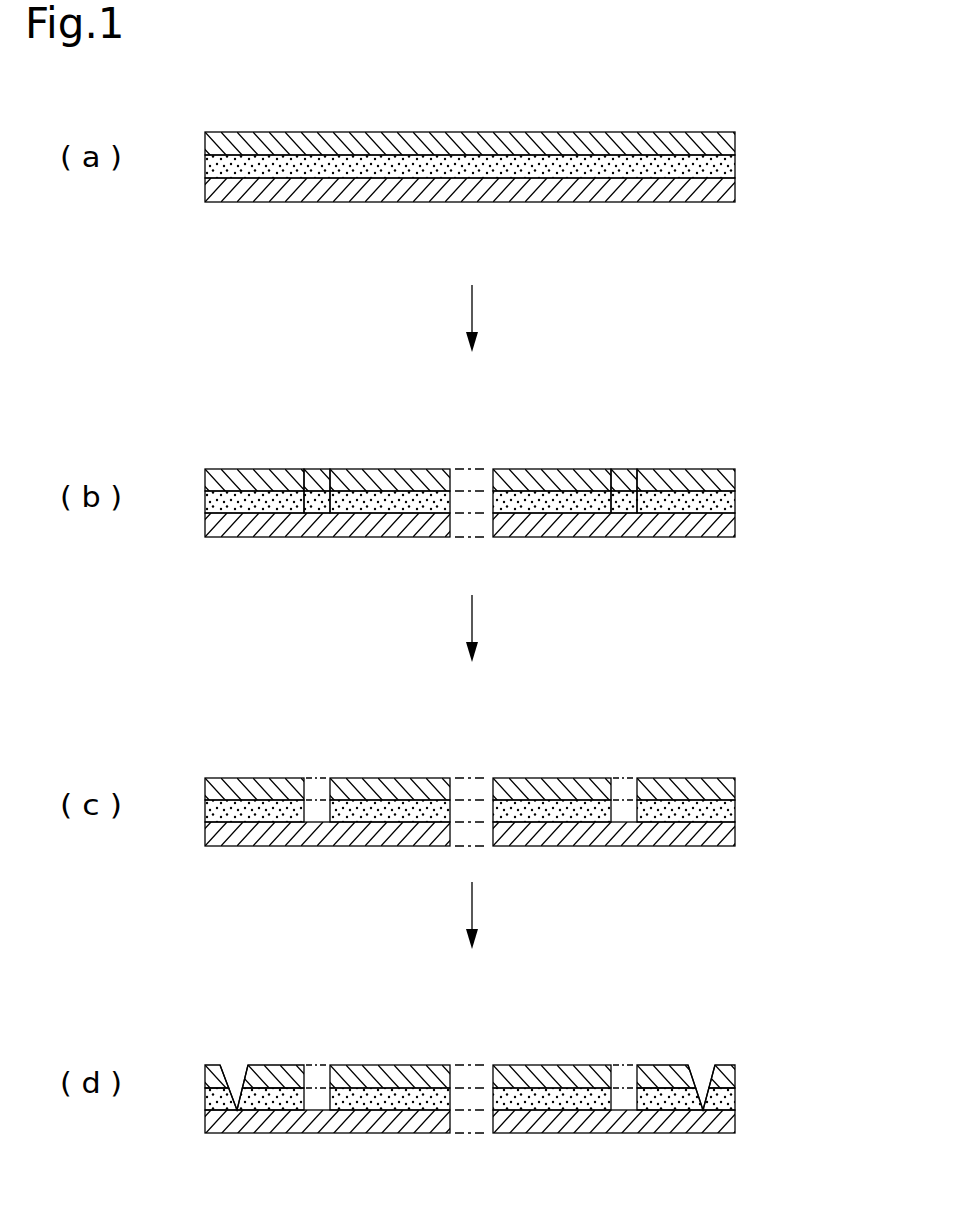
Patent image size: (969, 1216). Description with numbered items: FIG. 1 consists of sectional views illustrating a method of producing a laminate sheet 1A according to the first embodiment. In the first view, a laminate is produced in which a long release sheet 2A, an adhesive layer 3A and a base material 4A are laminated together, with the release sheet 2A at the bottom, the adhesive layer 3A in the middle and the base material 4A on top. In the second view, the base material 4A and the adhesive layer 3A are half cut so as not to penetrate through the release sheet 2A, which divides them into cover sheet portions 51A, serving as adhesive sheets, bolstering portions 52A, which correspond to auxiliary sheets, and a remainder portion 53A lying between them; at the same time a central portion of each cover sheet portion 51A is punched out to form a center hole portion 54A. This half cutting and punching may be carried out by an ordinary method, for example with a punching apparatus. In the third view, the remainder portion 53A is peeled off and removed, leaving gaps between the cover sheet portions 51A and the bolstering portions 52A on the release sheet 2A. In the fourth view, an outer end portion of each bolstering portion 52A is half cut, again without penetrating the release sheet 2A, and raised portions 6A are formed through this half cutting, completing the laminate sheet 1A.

The laminate sheet 1A is at (779, 1017).
The release sheet 2A is at (725, 193).
The adhesive layer 3A is at (735, 170).
The base material 4A is at (720, 143).
The raised portion 6A is at (221, 1064).
The cover sheet portion 51A is at (535, 469).
The bolstering portion 52A is at (247, 469).
The remainder portion 53A is at (318, 469).
The center hole portion 54A is at (473, 466).